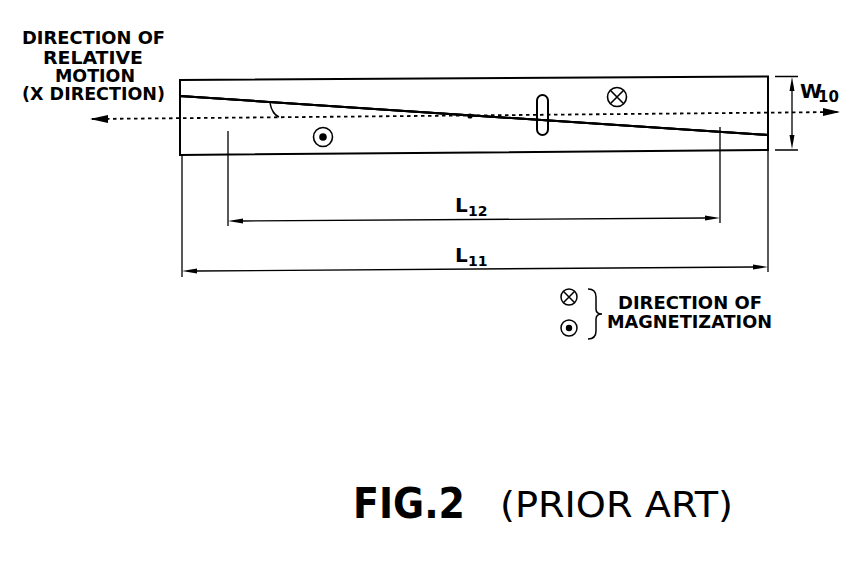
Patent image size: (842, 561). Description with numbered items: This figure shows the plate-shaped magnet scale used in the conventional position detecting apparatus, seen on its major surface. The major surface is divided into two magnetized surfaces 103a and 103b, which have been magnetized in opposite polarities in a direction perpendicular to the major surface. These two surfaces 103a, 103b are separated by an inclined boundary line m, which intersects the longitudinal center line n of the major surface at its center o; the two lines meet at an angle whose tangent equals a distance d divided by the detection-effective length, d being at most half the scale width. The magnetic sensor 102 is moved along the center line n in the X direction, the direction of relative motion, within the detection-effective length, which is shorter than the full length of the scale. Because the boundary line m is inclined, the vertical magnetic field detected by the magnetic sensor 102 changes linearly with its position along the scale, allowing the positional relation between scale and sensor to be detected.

The magnetic sensor 102 is at (548, 100).
The magnetized surface 103a is at (643, 92).
The magnetized surface 103b is at (380, 142).
The boundary line m is at (382, 110).
The center of the major surface o is at (470, 114).
The center line n is at (712, 112).